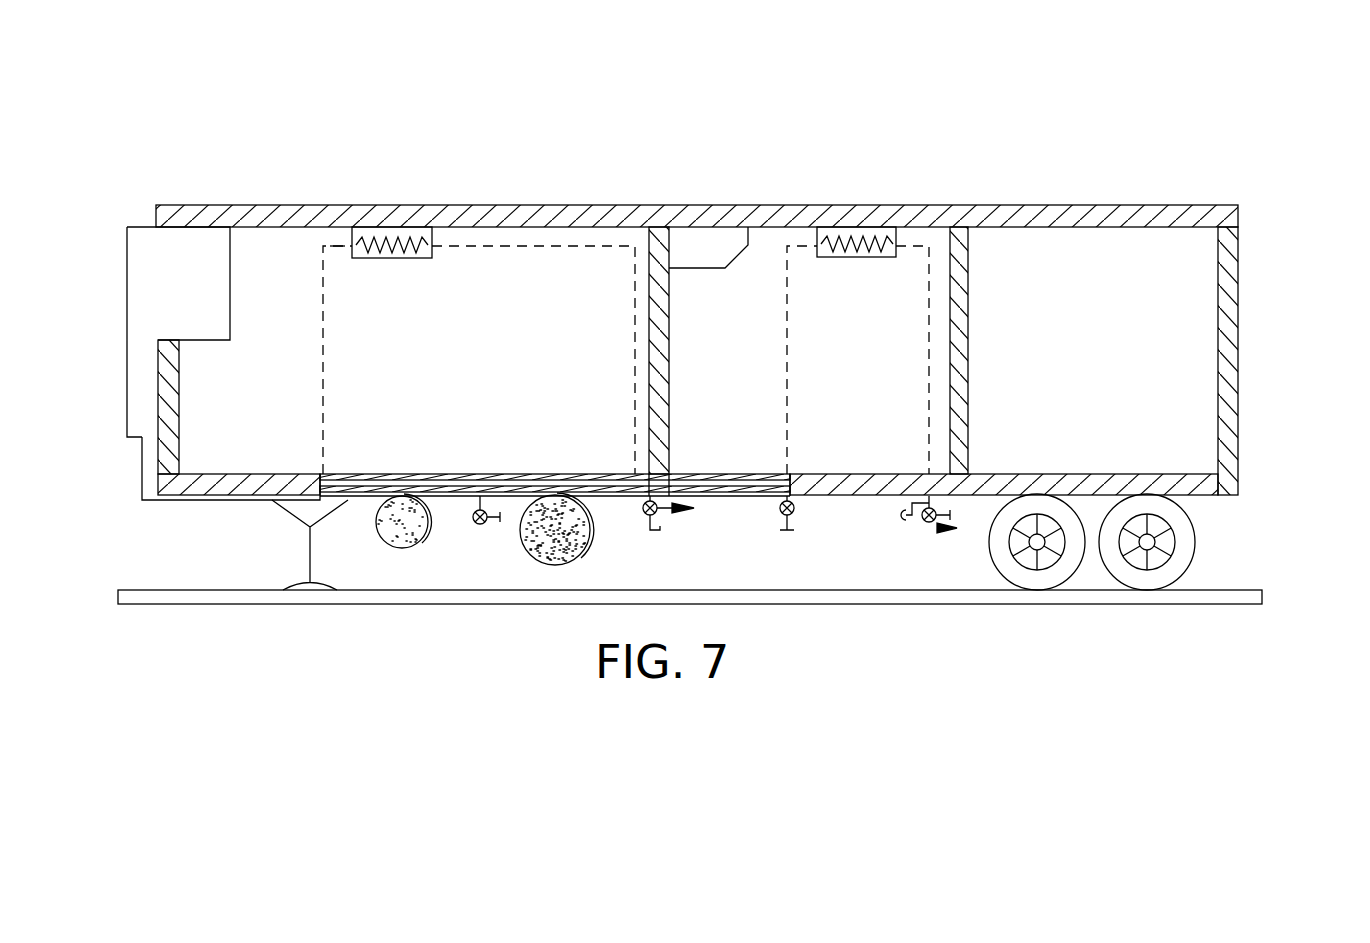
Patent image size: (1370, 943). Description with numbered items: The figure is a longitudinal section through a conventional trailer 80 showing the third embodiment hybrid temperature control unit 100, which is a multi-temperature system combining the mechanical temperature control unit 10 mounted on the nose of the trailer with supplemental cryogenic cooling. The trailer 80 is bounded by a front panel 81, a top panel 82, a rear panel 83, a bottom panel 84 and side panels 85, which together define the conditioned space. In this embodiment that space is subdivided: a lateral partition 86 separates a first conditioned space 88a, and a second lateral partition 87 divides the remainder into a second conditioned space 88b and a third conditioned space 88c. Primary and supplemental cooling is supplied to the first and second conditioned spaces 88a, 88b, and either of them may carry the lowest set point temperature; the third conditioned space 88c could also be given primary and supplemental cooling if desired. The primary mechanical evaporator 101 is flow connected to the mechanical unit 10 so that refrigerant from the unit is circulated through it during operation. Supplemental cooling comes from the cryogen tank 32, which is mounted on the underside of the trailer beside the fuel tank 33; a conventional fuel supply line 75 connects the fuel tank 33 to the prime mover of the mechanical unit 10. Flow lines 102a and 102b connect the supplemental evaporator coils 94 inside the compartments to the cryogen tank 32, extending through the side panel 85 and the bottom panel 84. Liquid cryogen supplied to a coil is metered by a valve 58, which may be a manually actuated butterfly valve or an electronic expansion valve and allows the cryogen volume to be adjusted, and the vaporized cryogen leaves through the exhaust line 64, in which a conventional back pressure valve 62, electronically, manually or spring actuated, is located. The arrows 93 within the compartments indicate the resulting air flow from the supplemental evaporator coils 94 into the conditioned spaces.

The mechanical temperature control unit 10 is at (98, 286).
The trailer 80 is at (732, 330).
The top panel 82 is at (636, 212).
The rear panel 83 is at (1232, 310).
The bottom panel 84 is at (850, 500).
The front panel 81 is at (165, 380).
The fuel supply line 75 is at (142, 480).
The side panel 85 is at (510, 237).
The lateral partition 86 is at (668, 352).
The lateral partition 87 is at (968, 352).
The first conditioned space 88a is at (625, 373).
The second conditioned space 88b is at (878, 373).
The third conditioned space 88c is at (1190, 373).
The air flow 93 is at (428, 305).
The supplemental evaporator coil 94 is at (424, 258).
The primary mechanical evaporator 101 is at (707, 270).
The flow line 102a is at (323, 348).
The flow line 102b is at (787, 404).
The fuel tank 33 is at (380, 542).
The cryogen tank 32 is at (595, 552).
The valve 58 is at (480, 524).
The back pressure valve 62 is at (655, 533).
The exhaust line 64 is at (680, 515).
The hybrid temperature control unit 100 is at (352, 640).